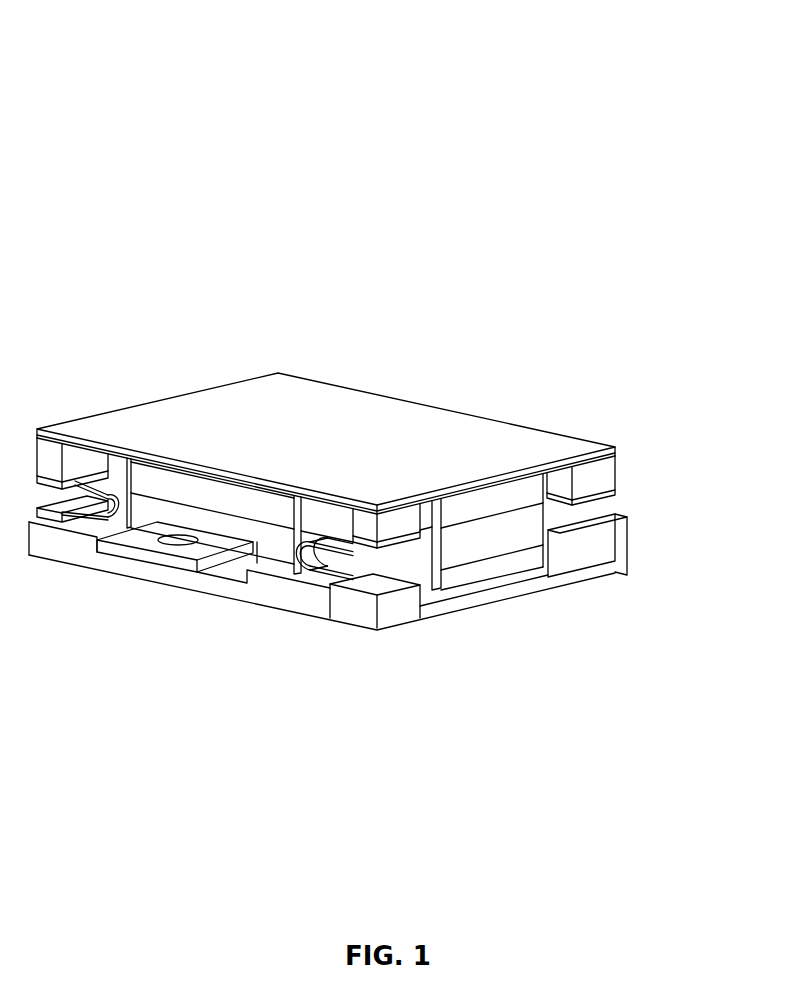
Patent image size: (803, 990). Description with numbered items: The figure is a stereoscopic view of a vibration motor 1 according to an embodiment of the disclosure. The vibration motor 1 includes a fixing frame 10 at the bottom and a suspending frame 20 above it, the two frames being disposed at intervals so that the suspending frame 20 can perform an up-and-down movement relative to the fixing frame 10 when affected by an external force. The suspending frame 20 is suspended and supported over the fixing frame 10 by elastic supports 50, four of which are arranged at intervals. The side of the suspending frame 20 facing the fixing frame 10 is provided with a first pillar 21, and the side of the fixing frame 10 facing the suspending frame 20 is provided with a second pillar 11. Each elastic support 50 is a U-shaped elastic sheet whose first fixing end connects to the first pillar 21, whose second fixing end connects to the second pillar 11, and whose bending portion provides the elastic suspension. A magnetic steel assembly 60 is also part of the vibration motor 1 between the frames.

The vibration motor 1 is at (366, 44).
The fixing frame 10 is at (556, 580).
The second pillar 11 is at (610, 551).
The suspending frame 20 is at (432, 425).
The first pillar 21 is at (607, 471).
The elastic support 50 is at (316, 548).
The magnetic steel assembly 60 is at (455, 555).